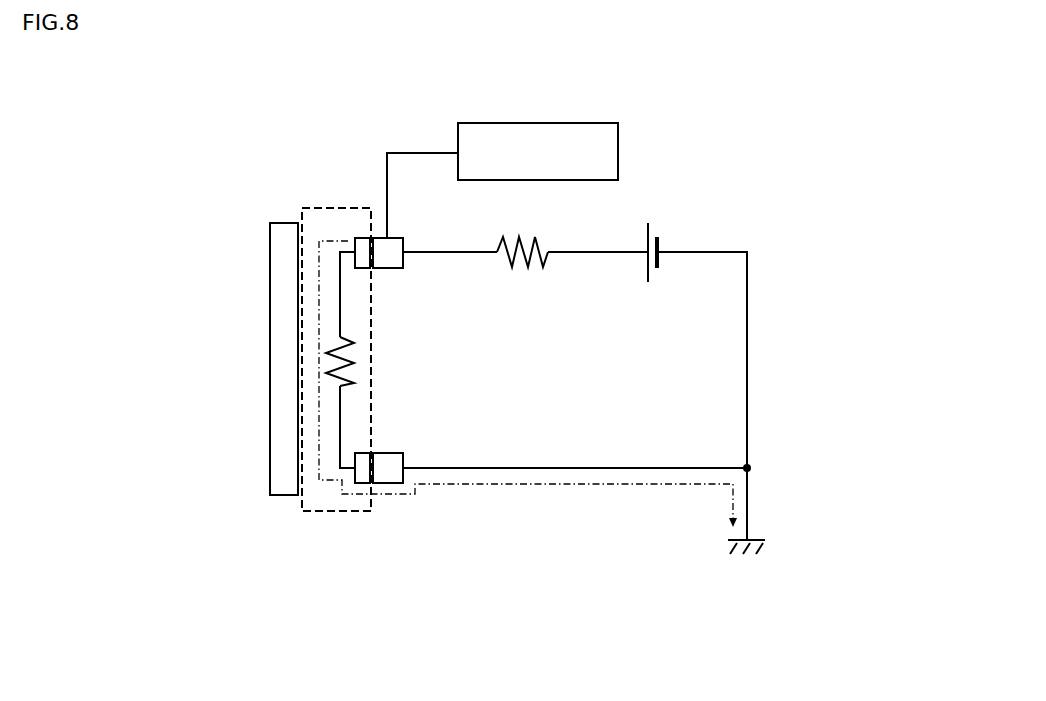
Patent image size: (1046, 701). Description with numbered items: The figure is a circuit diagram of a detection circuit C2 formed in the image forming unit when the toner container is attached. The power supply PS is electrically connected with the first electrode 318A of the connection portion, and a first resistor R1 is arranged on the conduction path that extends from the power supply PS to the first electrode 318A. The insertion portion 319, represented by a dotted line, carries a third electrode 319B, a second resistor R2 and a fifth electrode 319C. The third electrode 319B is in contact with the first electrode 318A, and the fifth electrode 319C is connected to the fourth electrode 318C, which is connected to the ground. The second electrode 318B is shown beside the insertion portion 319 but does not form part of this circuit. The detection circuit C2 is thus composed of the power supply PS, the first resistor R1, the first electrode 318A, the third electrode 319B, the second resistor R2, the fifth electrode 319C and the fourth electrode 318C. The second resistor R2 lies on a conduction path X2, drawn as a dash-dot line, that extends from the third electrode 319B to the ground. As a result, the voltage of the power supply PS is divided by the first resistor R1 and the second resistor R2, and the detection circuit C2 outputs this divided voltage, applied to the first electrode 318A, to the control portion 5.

The control portion 5 is at (618, 150).
The insertion portion 319 is at (343, 208).
The first electrode 318A is at (403, 268).
The second electrode 318B is at (270, 358).
The fourth electrode 318C is at (403, 453).
The third electrode 319B is at (363, 268).
The fifth electrode 319C is at (364, 453).
The first resistor R1 is at (548, 258).
The second resistor R2 is at (355, 366).
The power supply PS is at (659, 262).
The detection circuit C2 is at (689, 108).
The conduction path X2 is at (557, 484).